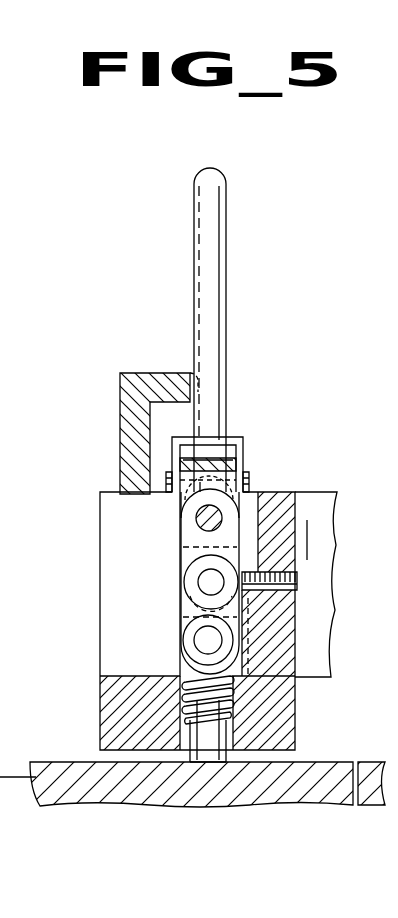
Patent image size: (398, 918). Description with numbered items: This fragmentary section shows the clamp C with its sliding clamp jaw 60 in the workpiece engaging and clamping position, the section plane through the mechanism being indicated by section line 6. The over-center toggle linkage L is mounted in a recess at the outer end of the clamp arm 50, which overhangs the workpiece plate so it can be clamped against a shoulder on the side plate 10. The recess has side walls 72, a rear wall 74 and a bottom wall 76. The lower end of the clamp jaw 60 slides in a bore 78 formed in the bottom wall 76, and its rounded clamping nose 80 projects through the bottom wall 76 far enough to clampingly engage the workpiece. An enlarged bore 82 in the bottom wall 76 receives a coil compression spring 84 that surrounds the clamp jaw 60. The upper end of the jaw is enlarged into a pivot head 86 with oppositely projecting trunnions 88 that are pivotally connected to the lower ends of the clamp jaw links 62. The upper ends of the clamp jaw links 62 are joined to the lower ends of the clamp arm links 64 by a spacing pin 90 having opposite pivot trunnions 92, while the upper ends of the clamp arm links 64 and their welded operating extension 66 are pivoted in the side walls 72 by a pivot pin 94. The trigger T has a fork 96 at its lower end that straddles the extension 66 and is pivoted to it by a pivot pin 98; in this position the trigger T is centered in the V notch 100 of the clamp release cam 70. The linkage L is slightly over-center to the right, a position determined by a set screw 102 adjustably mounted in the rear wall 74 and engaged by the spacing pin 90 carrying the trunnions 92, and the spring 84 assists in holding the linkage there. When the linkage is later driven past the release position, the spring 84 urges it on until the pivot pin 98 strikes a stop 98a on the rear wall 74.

The section line 6- 6 is at (250, 165).
The trigger T is at (228, 235).
The clamp C is at (326, 430).
The toggle linkage L is at (300, 548).
The side plate 10 is at (370, 790).
The clamp arm 50 is at (324, 506).
The sliding clamp jaw 60 is at (186, 730).
The clamp jaw links 62 is at (200, 640).
The clamp arm links 64 is at (186, 556).
The operating extension 66 is at (230, 463).
The clamp release cam 70 is at (117, 369).
The side walls 72 is at (100, 645).
The rear wall 74 is at (284, 633).
The bottom wall 76 is at (104, 690).
The bore 78 is at (230, 738).
The rounded clamping nose 80 is at (196, 762).
The enlarged bore 82 is at (231, 701).
The coil compression spring 84 is at (110, 704).
The pivot head 86 is at (186, 662).
The trunnions 88 is at (285, 616).
The spacing pin 90 is at (170, 606).
The pivot trunnions 92 is at (198, 583).
The pivot pin 94 is at (196, 520).
The fork 96 is at (244, 446).
The pivot pin 98 is at (176, 498).
The stop 98a is at (262, 492).
The V notch 100 is at (194, 372).
The set screw 102 is at (338, 590).